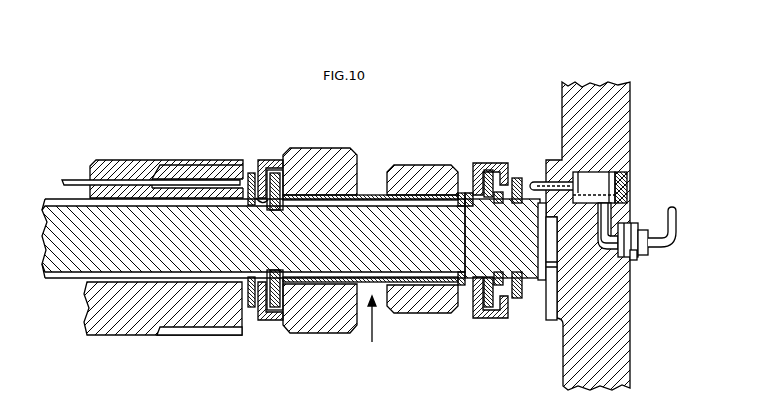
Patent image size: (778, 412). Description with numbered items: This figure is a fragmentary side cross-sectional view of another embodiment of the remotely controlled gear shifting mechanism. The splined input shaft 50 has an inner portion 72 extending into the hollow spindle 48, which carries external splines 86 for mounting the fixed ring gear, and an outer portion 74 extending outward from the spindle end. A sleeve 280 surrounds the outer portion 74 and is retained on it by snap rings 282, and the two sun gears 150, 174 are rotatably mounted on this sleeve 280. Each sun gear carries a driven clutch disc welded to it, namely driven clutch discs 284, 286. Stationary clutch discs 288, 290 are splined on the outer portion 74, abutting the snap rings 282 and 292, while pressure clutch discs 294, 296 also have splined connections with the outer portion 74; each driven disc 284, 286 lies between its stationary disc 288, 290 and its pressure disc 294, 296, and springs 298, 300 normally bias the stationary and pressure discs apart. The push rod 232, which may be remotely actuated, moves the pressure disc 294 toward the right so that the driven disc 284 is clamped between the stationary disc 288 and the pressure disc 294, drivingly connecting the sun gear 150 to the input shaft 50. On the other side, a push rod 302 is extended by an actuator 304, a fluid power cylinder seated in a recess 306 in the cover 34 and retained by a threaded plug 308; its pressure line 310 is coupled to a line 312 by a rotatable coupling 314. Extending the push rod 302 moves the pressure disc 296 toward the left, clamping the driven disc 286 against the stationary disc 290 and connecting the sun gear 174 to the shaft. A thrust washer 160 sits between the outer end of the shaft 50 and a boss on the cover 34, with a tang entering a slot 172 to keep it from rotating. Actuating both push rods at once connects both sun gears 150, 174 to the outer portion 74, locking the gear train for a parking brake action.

The cover 34 is at (630, 307).
The hollow spindle 48 is at (133, 164).
The splined input shaft 50 is at (382, 360).
The inner portion of splined input shaft 72 is at (158, 245).
The outer portion of splined input shaft 74 is at (498, 238).
The external splines 86 is at (188, 164).
The sun gear 150 is at (322, 167).
The thrust washer 160 is at (541, 287).
The slot 172 is at (549, 322).
The sun gear 174 is at (417, 170).
The push rod 232 is at (148, 180).
The sleeve 280 is at (373, 195).
The snap rings 282 is at (279, 275).
The driven clutch disc 284 is at (262, 160).
The driven clutch disc 286 is at (513, 163).
The stationary clutch disc 288 is at (272, 210).
The stationary clutch disc 290 is at (490, 207).
The snap ring 292 is at (483, 206).
The pressure clutch disc 294 is at (251, 172).
The pressure clutch disc 296 is at (518, 177).
The spring 298 is at (262, 200).
The spring 300 is at (505, 206).
The push rod 302 is at (567, 180).
The actuator 304 is at (600, 172).
The recess 306 is at (622, 170).
The threaded plug 308 is at (630, 178).
The pressure line 310 is at (612, 215).
The line 312 is at (676, 217).
The rotatable coupling 314 is at (640, 258).